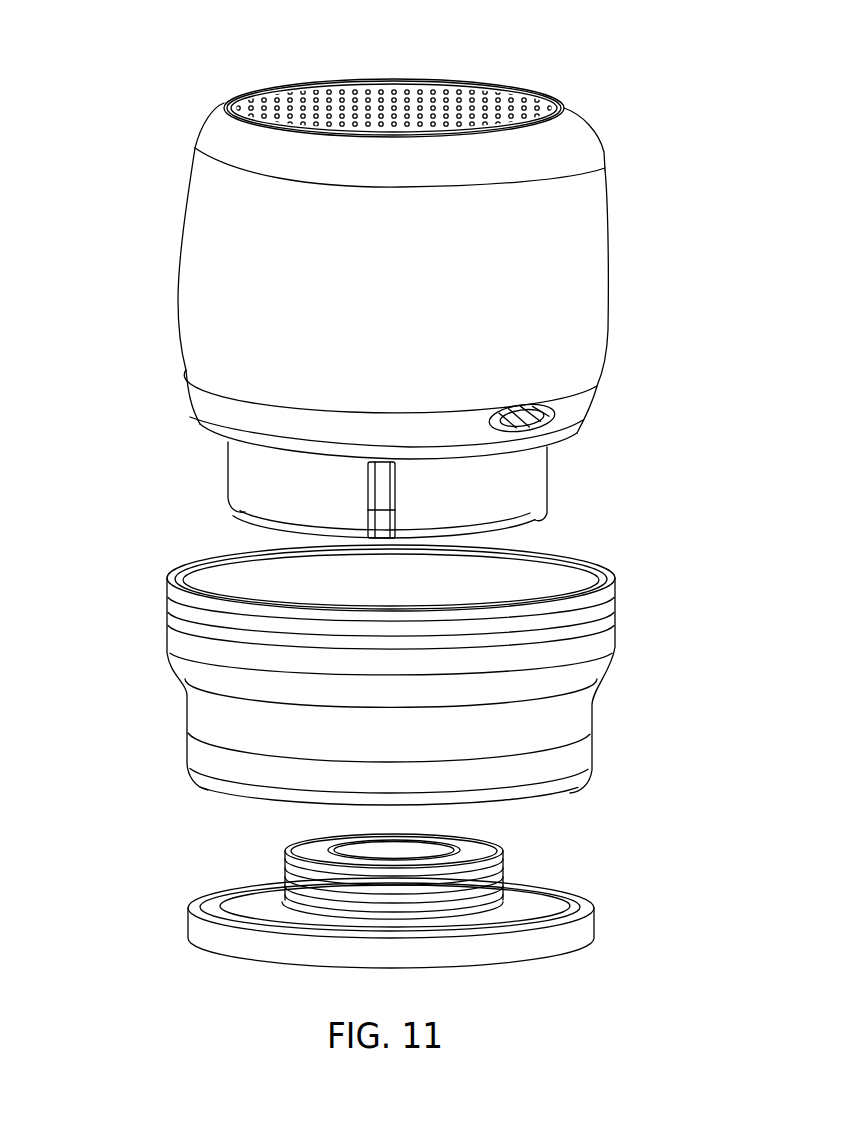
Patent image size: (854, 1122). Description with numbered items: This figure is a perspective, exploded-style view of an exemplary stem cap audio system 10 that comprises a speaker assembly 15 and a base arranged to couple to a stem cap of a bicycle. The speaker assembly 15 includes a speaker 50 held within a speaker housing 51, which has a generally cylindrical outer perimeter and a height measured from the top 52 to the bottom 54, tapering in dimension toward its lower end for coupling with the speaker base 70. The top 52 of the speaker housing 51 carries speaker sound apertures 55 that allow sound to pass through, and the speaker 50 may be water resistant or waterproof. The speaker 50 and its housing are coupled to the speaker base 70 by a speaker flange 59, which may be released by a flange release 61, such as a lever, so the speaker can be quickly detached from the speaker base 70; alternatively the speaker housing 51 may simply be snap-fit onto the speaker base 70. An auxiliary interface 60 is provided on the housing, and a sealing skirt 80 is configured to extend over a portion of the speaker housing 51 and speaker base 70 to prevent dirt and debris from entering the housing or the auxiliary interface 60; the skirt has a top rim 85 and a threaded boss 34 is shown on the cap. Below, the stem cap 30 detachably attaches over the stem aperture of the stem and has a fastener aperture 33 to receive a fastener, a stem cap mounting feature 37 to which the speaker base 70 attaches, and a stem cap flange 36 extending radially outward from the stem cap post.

The stem cap audio system 10 is at (162, 195).
The speaker assembly 15 is at (228, 148).
The speaker sound apertures 55 is at (393, 93).
The top 52 is at (553, 107).
The speaker 50 is at (575, 213).
The speaker housing 51 is at (562, 290).
The auxiliary interface 60 is at (552, 418).
The flange release 61 is at (373, 470).
The speaker flange 59 is at (368, 497).
The speaker base 70 is at (310, 517).
The bottom 54 is at (528, 522).
The collar top rim 85 is at (555, 593).
The sealing skirt 80 is at (525, 728).
The threaded boss 34 is at (305, 852).
The fastener aperture 33 is at (425, 855).
The stem cap mounting feature 37 is at (487, 883).
The stem cap 30 is at (535, 908).
The stem cap flange 36 is at (553, 945).